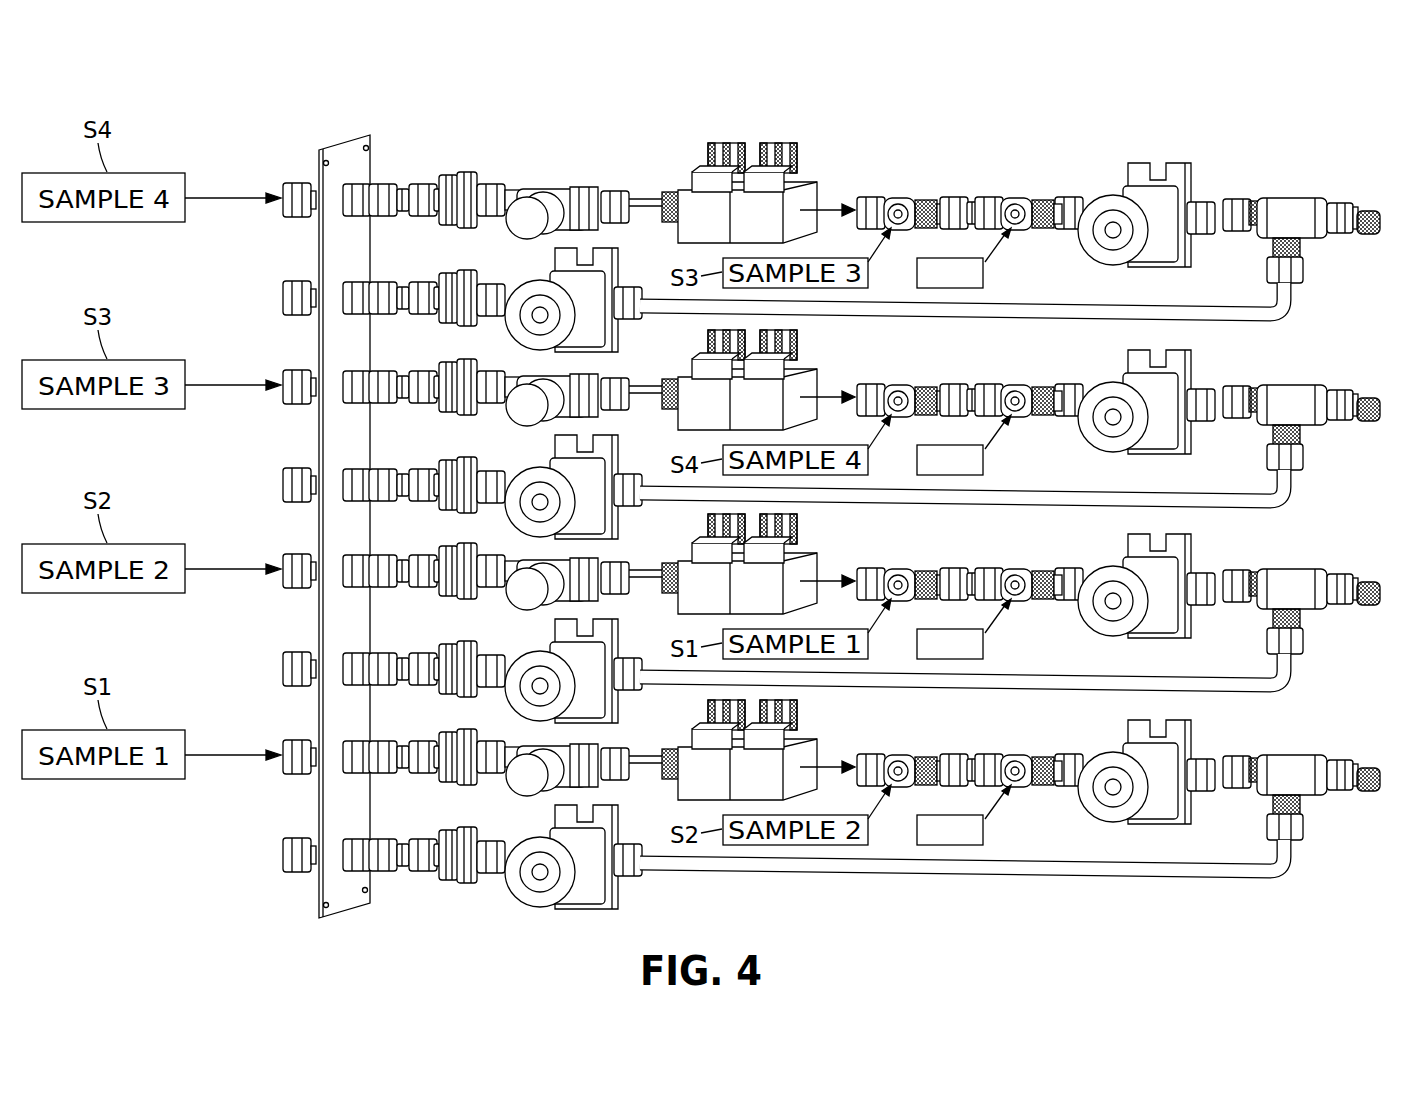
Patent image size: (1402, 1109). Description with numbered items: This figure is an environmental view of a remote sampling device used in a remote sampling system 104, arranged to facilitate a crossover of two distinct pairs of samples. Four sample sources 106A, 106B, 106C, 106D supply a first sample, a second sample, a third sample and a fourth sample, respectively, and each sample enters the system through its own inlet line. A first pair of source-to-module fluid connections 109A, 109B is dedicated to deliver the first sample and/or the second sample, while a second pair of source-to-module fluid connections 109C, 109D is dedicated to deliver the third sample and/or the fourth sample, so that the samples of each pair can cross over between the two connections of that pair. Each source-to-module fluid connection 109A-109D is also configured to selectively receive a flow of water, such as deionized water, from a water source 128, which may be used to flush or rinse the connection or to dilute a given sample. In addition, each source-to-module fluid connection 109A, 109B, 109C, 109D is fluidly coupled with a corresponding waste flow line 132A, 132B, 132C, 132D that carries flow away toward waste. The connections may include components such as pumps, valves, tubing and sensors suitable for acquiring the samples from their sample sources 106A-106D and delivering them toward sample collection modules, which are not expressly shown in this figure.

The remote sampling system 104 is at (400, 108).
The sample source 106A is at (250, 730).
The sample source 106B is at (250, 544).
The sample source 106C is at (250, 360).
The sample source 106D is at (222, 191).
The source-to-module fluid connection 109A is at (1001, 746).
The source-to-module fluid connection 109B is at (1001, 560).
The source-to-module fluid connection 109C is at (1001, 376).
The source-to-module fluid connection 109D is at (993, 200).
The water source 128 is at (990, 257).
The waste flow line 132A is at (962, 885).
The waste flow line 132B is at (962, 699).
The waste flow line 132C is at (962, 515).
The waste flow line 132D is at (897, 320).